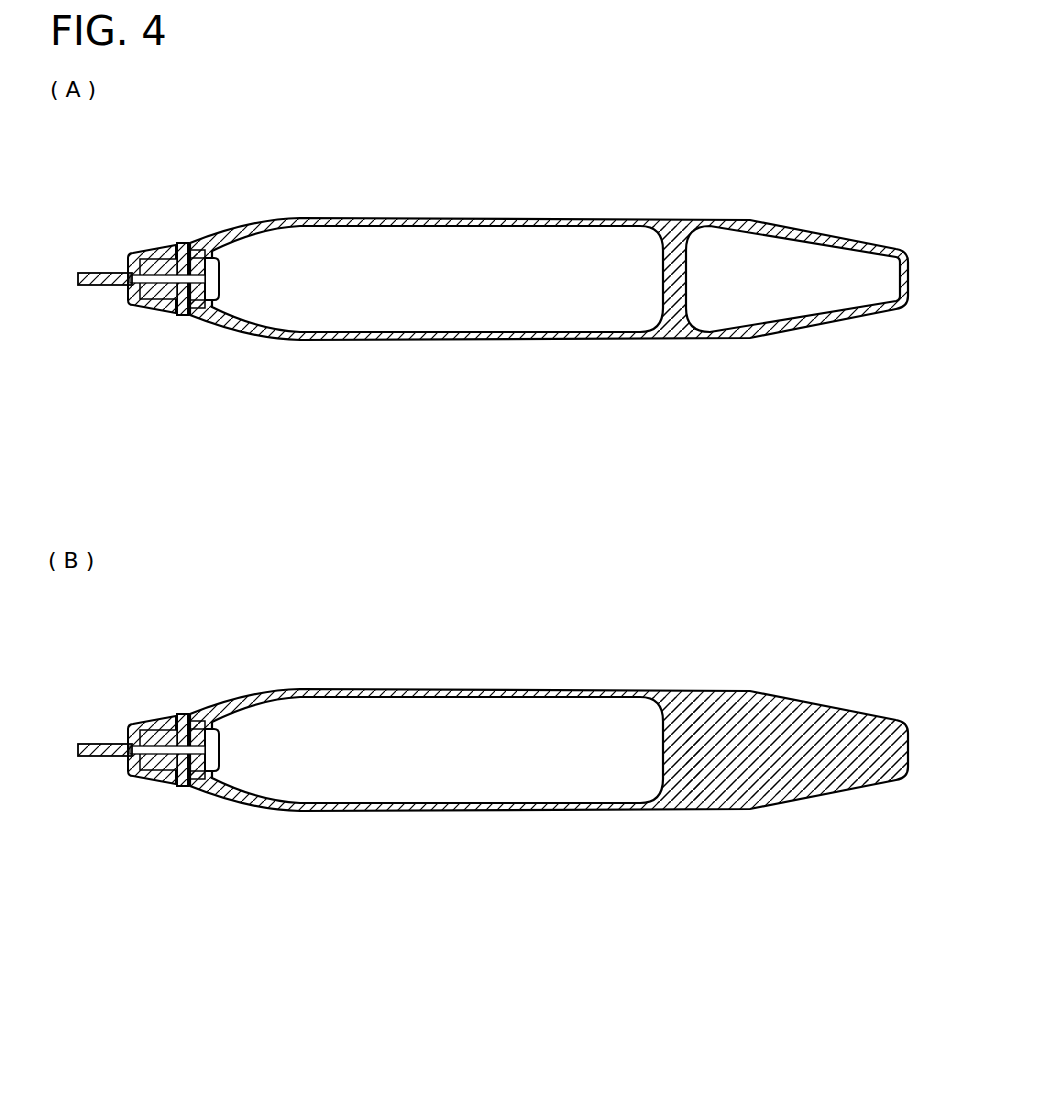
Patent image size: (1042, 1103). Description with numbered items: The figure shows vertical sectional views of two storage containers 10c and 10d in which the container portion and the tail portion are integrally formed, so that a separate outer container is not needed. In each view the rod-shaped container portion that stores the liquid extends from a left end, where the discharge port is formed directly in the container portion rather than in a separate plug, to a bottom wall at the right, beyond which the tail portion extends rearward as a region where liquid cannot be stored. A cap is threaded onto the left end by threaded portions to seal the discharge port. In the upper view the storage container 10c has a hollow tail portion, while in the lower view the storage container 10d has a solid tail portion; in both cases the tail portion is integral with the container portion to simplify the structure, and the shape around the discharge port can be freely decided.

The storage container 10c is at (491, 300).
The storage container 10d is at (493, 774).